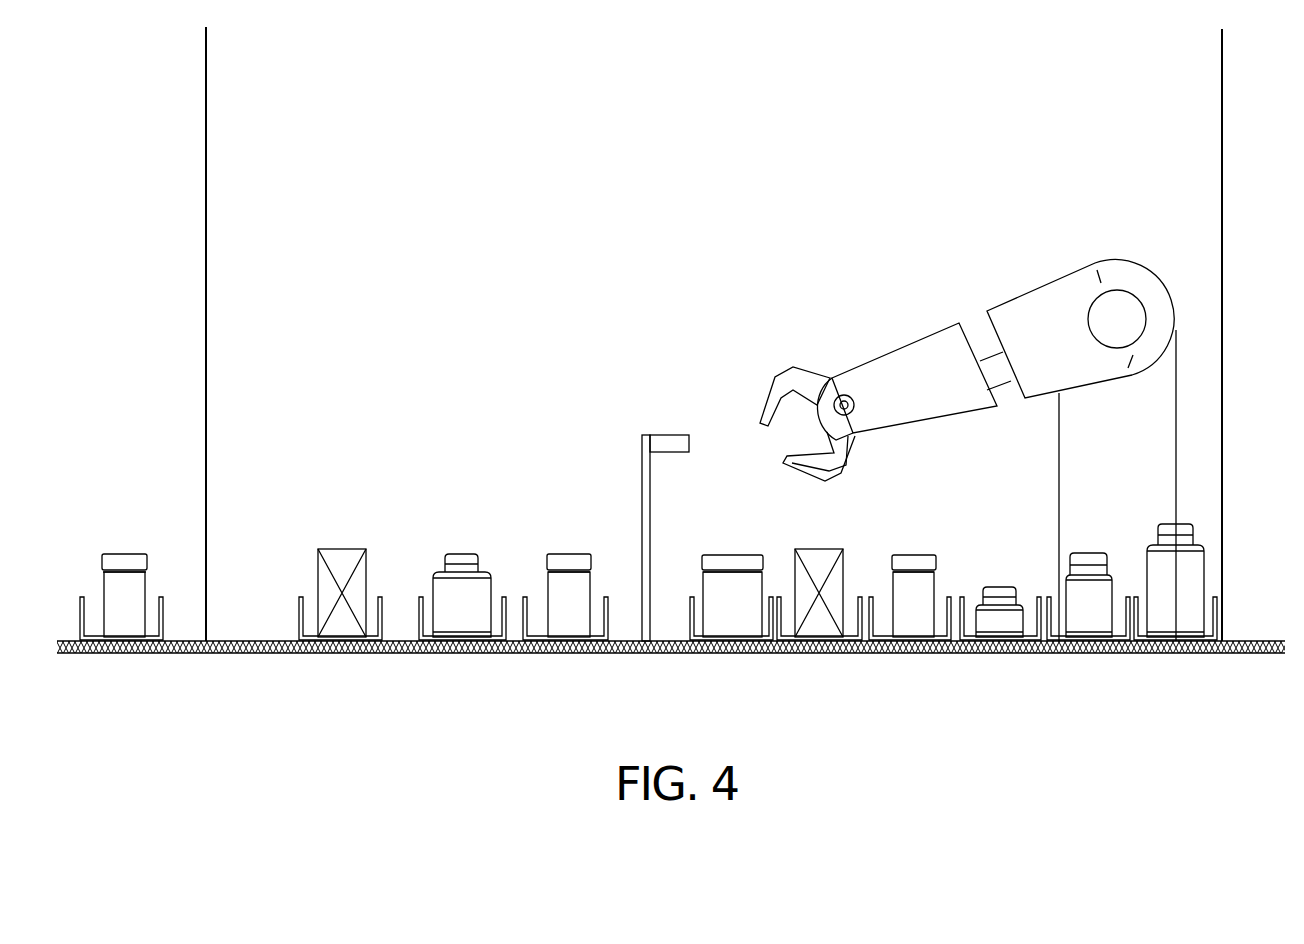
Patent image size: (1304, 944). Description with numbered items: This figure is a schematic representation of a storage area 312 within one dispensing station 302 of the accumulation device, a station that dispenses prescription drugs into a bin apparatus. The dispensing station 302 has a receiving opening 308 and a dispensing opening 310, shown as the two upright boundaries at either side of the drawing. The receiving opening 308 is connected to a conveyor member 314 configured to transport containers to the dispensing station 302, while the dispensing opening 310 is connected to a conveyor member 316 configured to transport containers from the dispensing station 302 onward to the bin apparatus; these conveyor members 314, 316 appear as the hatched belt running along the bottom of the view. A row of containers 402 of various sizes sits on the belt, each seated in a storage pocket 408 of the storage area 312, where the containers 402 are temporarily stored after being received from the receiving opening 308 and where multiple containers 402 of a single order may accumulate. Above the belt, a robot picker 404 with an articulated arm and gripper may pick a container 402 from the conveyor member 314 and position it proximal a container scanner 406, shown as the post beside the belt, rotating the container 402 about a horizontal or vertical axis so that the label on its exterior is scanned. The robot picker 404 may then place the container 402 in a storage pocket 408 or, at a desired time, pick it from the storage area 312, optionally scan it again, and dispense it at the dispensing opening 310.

The dispensing station 302 is at (358, 262).
The receiving opening 308 is at (1226, 621).
The dispensing opening 310 is at (200, 615).
The storage area 312 is at (265, 641).
The conveyor member 314 is at (1241, 654).
The conveyor member 316 is at (157, 653).
The container 402 is at (568, 554).
The robot picker 404 is at (1056, 281).
The container scanner 406 is at (660, 443).
The storage pocket 408 is at (300, 613).